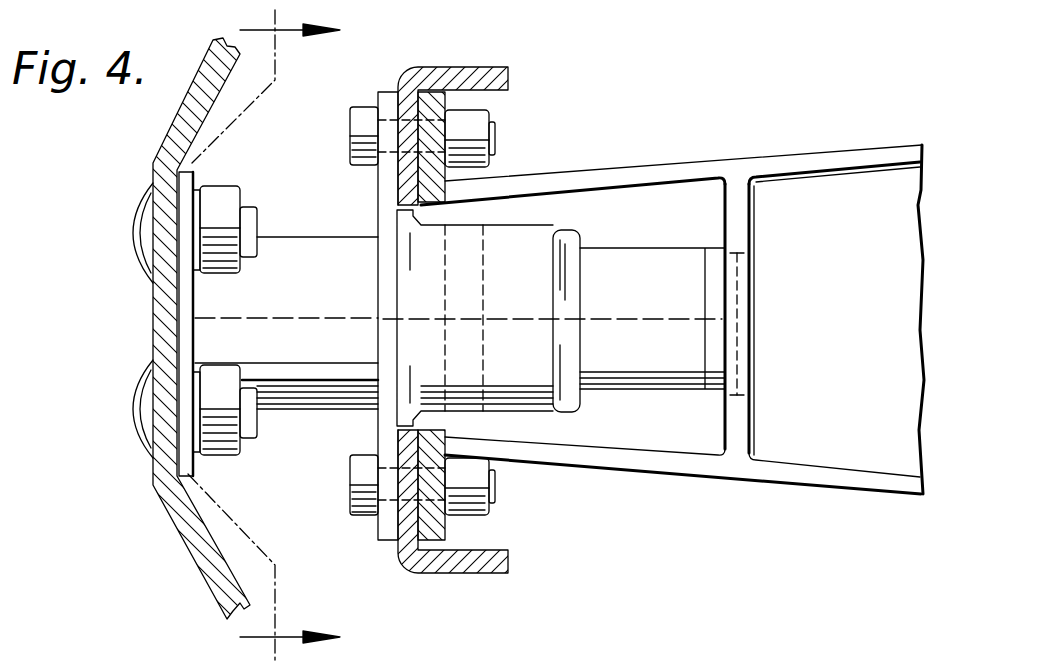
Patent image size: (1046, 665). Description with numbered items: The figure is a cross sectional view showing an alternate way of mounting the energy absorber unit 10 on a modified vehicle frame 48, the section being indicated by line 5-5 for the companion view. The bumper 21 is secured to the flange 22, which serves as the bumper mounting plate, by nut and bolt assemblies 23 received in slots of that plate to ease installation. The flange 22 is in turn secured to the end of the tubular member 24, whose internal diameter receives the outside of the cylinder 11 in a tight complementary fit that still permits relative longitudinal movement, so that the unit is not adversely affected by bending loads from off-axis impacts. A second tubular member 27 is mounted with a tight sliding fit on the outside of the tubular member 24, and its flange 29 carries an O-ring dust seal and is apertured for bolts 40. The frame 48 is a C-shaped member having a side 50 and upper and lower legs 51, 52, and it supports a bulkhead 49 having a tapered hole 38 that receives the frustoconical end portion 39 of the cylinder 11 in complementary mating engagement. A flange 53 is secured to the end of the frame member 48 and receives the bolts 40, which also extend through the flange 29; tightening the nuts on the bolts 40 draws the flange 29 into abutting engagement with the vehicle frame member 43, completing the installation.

The line 5- 5 is at (264, 337).
The energy absorber unit 10 is at (288, 424).
The cylinder 11 is at (637, 392).
The bumper 21 is at (185, 541).
The flange 22 is at (187, 300).
The nut and bolt assemblies 23 is at (140, 212).
The tubular member 24 is at (332, 238).
The second tubular member 27 is at (530, 296).
The flange 29 is at (387, 340).
The tapered hole 38 is at (735, 263).
The frustoconical end portion 39 is at (737, 241).
The bolts 40 is at (350, 132).
The vehicle frame member 43 is at (398, 563).
The vehicle frame 48 is at (525, 271).
The bulkhead 49 is at (545, 232).
The side 50 is at (890, 307).
The upper leg 51 is at (787, 153).
The lower leg 52 is at (803, 487).
The flange 53 is at (432, 107).